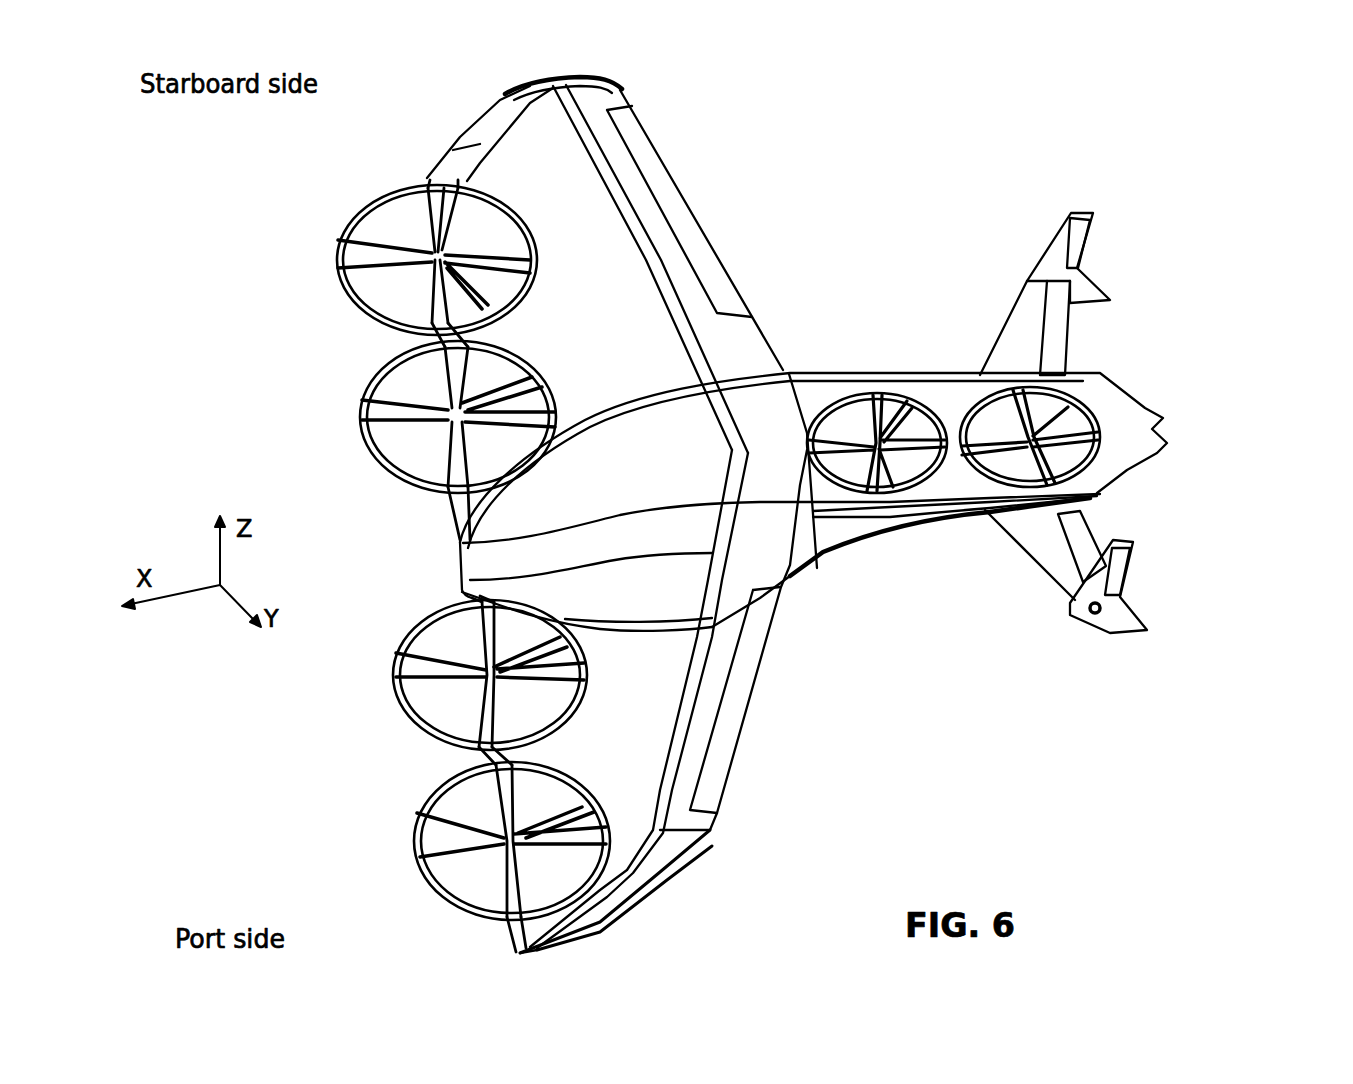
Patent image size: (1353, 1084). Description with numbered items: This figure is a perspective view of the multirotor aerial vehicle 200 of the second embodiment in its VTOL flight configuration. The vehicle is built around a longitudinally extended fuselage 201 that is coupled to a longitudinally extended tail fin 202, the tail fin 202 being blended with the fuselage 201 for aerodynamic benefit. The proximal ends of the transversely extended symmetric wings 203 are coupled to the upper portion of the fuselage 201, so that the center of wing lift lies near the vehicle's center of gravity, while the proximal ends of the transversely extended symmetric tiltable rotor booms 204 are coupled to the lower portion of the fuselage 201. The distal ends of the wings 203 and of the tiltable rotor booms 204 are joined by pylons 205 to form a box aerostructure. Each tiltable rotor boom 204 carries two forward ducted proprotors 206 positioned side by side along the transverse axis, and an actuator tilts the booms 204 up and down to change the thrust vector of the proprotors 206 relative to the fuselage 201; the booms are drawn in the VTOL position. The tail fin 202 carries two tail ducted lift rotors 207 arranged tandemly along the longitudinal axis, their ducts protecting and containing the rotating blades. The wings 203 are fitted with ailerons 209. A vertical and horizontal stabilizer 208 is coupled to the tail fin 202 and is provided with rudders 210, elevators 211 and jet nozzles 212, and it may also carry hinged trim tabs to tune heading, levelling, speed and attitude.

The multirotor aerial vehicle 200 is at (888, 150).
The fuselage 201 is at (655, 392).
The blended tail fin 202 is at (933, 522).
The wings 203 is at (616, 98).
The tiltable rotor booms 204 is at (424, 224).
The pylons 205 is at (478, 120).
The forward ducted proprotors 206 is at (390, 318).
The tail ducted lift rotors 207 is at (880, 390).
The vertical and horizontal stabilizer 208 is at (1100, 297).
The ailerons 209 is at (712, 254).
The rudders 210 is at (1092, 242).
The elevators 211 is at (1045, 338).
The jet nozzles 212 is at (1097, 615).